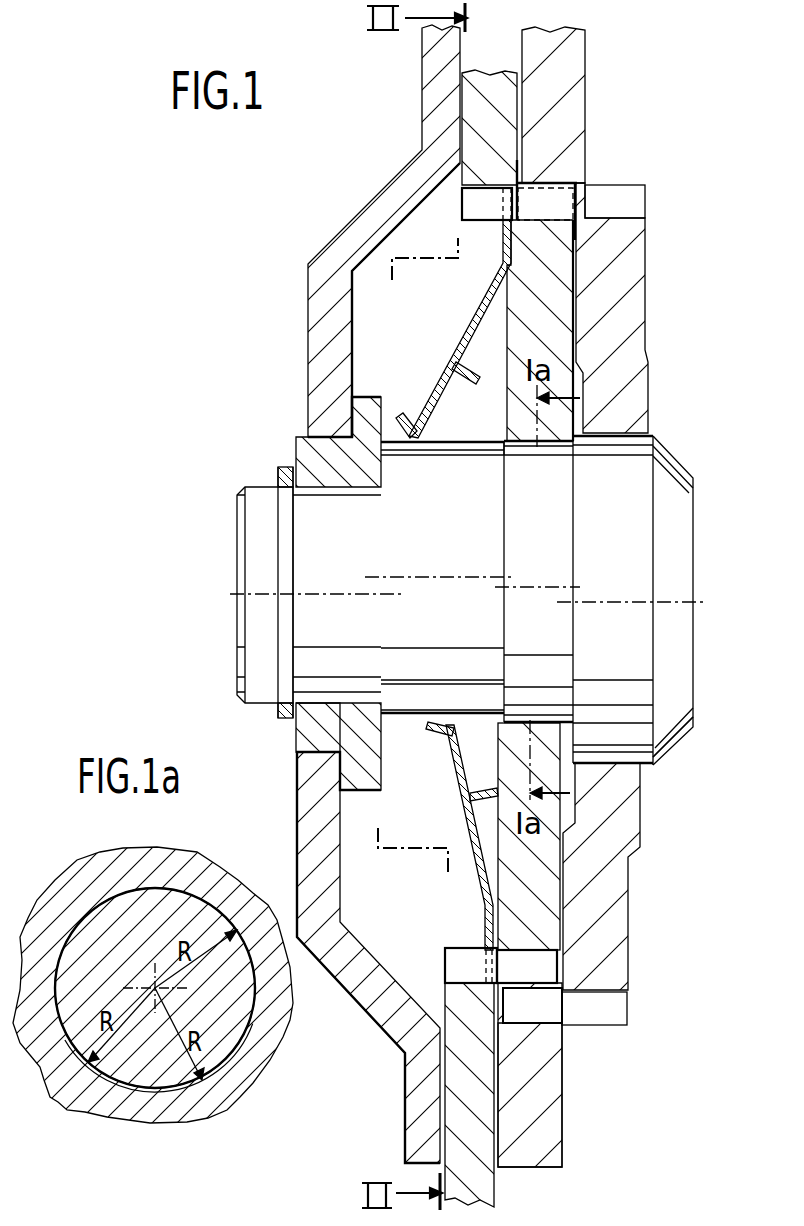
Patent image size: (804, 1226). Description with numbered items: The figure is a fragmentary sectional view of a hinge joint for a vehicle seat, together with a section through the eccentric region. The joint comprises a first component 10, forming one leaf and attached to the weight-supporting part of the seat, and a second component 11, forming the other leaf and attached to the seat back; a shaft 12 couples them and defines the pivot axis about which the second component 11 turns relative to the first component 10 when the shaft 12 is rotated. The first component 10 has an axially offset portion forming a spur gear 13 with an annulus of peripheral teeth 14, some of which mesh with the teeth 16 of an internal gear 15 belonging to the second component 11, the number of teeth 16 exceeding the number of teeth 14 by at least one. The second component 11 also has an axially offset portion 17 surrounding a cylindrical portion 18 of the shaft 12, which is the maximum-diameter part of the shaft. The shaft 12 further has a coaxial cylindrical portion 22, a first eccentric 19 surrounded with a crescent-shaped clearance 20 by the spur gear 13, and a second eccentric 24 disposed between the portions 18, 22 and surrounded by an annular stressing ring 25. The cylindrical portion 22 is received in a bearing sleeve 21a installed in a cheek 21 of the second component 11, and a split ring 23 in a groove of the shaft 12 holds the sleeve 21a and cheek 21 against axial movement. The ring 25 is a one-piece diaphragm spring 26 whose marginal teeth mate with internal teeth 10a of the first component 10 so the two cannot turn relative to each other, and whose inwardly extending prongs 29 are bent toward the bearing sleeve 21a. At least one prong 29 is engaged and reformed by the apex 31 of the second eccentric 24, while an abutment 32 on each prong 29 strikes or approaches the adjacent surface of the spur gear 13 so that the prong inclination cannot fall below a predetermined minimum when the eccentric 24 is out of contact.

In FIG. 1, the first component 10 is at (470, 1188).
In FIG. 1, the internal teeth 10a is at (470, 953).
In FIG. 1, the second component 11 is at (548, 120).
In FIG. 1, the shaft 12 is at (699, 489).
In FIG. 1, the spur gear 13 is at (548, 285).
In FIG. 1a, the spur gear 13 is at (153, 868).
In FIG. 1, the peripheral teeth 14 is at (538, 970).
In FIG. 1, the internal gear 15 is at (549, 1033).
In FIG. 1, the teeth 16 is at (527, 1003).
In FIG. 1, the axially offset portion 17 is at (606, 310).
In FIG. 1, the cylindrical portion 18 is at (624, 539).
In FIG. 1, the first eccentric 19 is at (554, 539).
In FIG. 1a, the first eccentric 19 is at (113, 935).
In FIG. 1, the clearance 20 is at (650, 758).
In FIG. 1a, the clearance 20 is at (167, 1090).
In FIG. 1, the cheek 21 is at (398, 207).
In FIG. 1, the bearing sleeve 21a is at (315, 740).
In FIG. 1, the cylindrical portion 22 is at (343, 539).
In FIG. 1, the split ring 23 is at (285, 465).
In FIG. 1, the second eccentric 24 is at (455, 539).
In FIG. 1, the ring 25 is at (447, 330).
In FIG. 1, the diaphragm spring 26 is at (455, 772).
In FIG. 1, the prongs 29 is at (448, 362).
In FIG. 1, the apex 31 is at (479, 437).
In FIG. 1, the abutment 32 is at (474, 382).